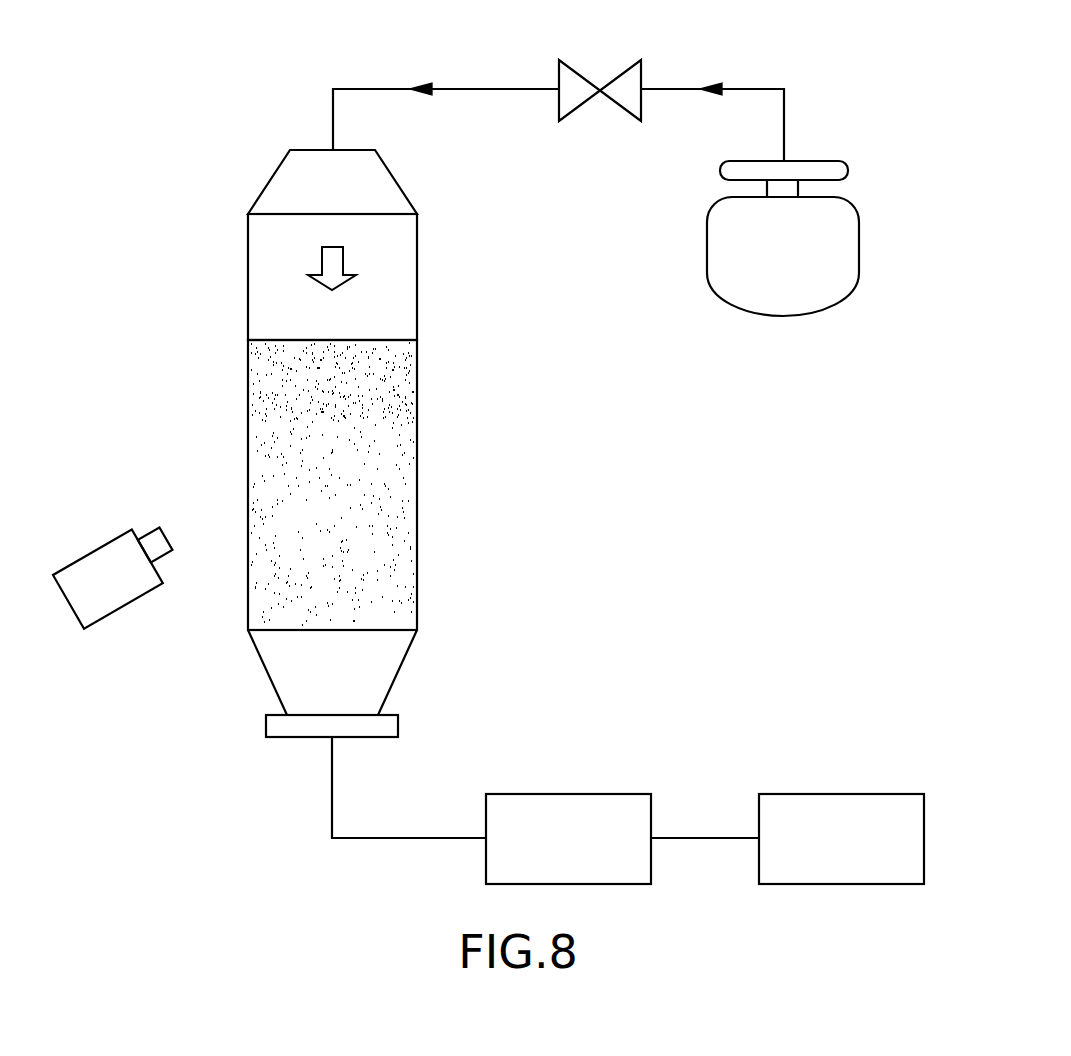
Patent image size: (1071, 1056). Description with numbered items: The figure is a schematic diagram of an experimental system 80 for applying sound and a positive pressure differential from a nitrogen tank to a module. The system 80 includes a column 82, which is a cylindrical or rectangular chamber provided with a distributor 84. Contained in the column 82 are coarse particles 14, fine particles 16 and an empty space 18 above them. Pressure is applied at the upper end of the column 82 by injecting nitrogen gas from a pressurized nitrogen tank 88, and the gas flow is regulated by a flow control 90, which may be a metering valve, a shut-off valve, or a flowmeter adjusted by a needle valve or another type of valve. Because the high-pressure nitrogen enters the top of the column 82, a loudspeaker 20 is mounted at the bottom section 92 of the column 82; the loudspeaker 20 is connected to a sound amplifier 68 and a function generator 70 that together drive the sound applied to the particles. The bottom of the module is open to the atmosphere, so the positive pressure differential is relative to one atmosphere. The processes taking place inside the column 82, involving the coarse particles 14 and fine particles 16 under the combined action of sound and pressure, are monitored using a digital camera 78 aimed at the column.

The coarse particles 14 is at (392, 486).
The fine particles 16 is at (398, 383).
The empty space 18 is at (393, 291).
The loudspeaker 20 is at (398, 725).
The sound amplifier 68 is at (572, 794).
The function generator 70 is at (845, 794).
The digital camera 78 is at (100, 545).
The system 80 is at (598, 158).
The column 82 is at (324, 444).
The distributor 84 is at (370, 485).
The pressurized nitrogen tank 88 is at (718, 248).
The flow control 90 is at (584, 100).
The bottom section 92 is at (250, 640).